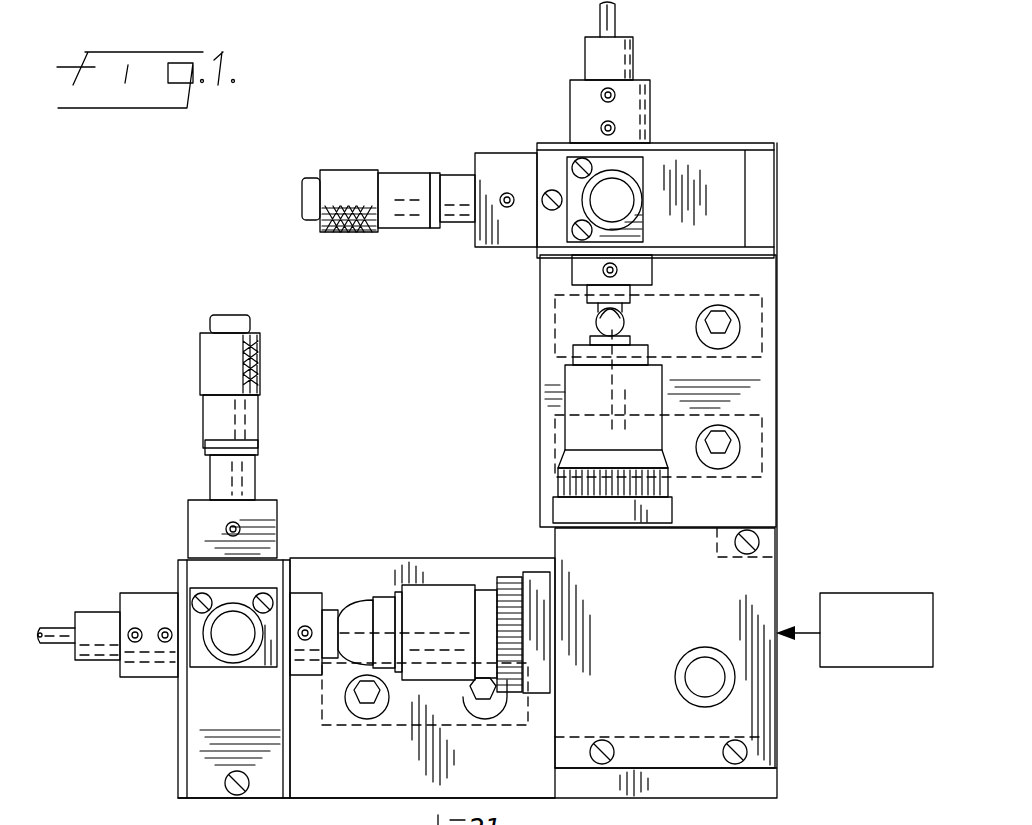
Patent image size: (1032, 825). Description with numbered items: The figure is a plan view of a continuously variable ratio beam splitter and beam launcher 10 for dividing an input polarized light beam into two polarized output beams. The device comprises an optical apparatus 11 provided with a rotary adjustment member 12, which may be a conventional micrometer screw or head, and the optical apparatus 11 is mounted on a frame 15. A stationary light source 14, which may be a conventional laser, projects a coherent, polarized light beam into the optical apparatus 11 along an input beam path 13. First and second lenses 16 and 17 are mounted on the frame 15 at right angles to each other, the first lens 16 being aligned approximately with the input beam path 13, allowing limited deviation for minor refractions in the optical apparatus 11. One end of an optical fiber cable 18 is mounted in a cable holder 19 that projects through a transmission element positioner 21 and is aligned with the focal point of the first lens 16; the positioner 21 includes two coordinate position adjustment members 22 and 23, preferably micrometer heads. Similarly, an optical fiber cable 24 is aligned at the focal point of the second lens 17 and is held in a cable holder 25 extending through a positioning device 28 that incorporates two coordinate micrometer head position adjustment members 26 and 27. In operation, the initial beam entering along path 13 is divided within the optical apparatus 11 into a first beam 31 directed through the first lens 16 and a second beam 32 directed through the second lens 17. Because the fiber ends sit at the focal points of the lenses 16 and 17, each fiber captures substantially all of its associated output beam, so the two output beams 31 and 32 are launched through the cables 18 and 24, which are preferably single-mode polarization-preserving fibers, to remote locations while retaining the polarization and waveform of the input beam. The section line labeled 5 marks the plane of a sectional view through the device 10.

The section line 5- 5 is at (218, 483).
The continuously variable ratio beam splitter and beam launcher 10 is at (453, 446).
The optical apparatus 11 is at (757, 596).
The rotary adjustment member 12 is at (698, 684).
The input beam path 13 is at (812, 645).
The stationary light source 14 is at (896, 667).
The frame 15 is at (768, 402).
The first lens 16 is at (455, 585).
The second lens 17 is at (575, 385).
The optical fiber cable 18 is at (52, 628).
The cable holder 19 is at (100, 660).
The transmission element positioner 21 is at (263, 580).
The coordinate position adjustment member 22 is at (238, 645).
The coordinate position adjustment member 23 is at (262, 433).
The optical fiber cable 24 is at (618, 22).
The cable holder 25 is at (635, 67).
The coordinate micrometer head position adjustment member 26 is at (612, 190).
The coordinate micrometer head position adjustment member 27 is at (428, 155).
The positioning device 28 is at (745, 192).
The first beam 31 is at (343, 630).
The second beam 32 is at (620, 320).